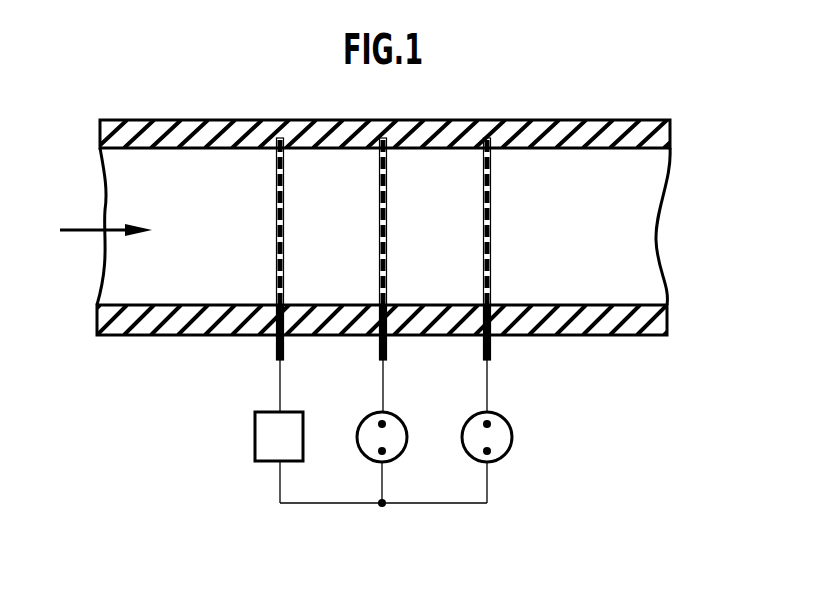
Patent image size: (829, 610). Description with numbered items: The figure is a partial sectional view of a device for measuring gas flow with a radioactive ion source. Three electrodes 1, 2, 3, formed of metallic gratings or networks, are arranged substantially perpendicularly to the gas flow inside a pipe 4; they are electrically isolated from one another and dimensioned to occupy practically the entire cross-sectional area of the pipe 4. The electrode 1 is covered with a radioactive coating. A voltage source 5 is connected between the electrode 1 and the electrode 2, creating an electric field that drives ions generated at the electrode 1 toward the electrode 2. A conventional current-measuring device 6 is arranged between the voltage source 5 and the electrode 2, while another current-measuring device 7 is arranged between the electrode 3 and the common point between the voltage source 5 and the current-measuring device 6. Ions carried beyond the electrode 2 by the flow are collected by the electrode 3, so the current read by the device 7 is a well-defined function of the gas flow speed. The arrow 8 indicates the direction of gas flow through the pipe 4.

The electrode 1 is at (276, 228).
The electrode 2 is at (379, 230).
The electrode 3 is at (491, 222).
The pipe 4 is at (162, 132).
The voltage source 5 is at (272, 437).
The current-measuring device 6 is at (378, 444).
The current-measuring device 7 is at (492, 442).
The arrow 8 is at (106, 215).